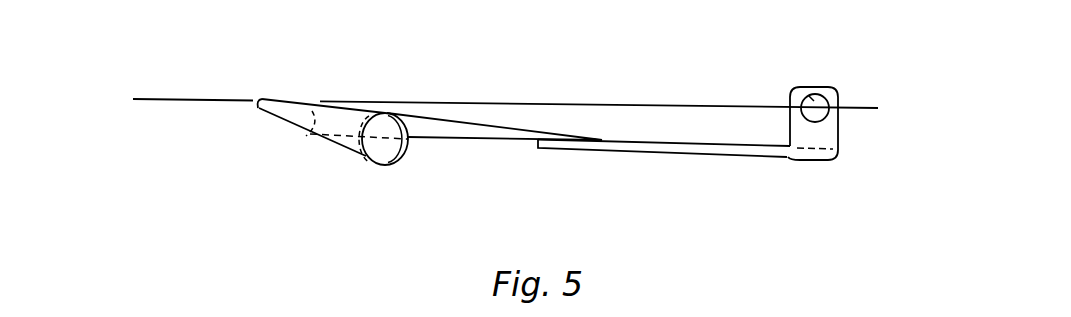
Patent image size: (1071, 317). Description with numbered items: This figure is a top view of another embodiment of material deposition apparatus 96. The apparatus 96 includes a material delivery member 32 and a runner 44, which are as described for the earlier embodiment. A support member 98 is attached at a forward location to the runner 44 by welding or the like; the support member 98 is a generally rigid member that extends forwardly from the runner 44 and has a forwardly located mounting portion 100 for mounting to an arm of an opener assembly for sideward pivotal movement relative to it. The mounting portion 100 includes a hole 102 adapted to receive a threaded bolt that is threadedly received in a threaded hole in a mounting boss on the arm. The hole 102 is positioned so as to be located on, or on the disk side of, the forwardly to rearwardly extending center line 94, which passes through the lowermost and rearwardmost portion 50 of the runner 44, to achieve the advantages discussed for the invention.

The material delivery member 32 is at (398, 165).
The runner 44 is at (485, 141).
The lowermost and rearwardmost portion 50 is at (337, 122).
The center line 94 is at (862, 107).
The material deposition apparatus 96 is at (735, 195).
The support member 98 is at (622, 141).
The mounting portion 100 is at (838, 146).
The hole 102 is at (803, 102).